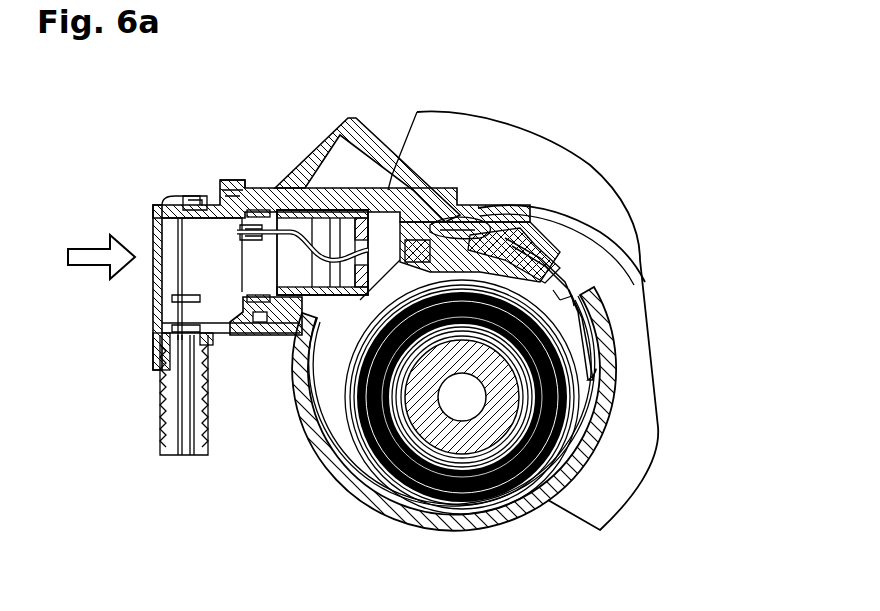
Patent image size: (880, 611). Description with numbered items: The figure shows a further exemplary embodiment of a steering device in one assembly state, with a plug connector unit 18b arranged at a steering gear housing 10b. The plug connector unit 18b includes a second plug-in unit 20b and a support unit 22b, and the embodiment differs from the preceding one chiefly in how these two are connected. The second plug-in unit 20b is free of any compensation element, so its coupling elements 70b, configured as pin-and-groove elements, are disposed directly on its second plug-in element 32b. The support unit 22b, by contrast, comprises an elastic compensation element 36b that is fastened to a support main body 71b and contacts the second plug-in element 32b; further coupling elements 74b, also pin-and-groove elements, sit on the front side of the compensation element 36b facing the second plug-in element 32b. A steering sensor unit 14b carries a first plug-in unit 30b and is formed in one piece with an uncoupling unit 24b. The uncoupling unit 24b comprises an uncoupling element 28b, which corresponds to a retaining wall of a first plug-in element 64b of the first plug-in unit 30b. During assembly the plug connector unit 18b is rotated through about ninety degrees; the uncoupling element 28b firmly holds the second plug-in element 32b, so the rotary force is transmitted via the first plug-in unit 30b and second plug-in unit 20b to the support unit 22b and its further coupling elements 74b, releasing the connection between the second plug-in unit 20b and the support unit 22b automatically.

The steering gear housing 10b is at (658, 144).
The steering sensor unit 14b is at (586, 308).
The plug connector unit 18b is at (200, 173).
The second plug-in unit 20b is at (388, 214).
The support unit 22b is at (263, 170).
The uncoupling unit 24b is at (278, 340).
The uncoupling element 28b is at (473, 226).
The first plug-in unit 30b is at (482, 228).
The second plug-in element 32b is at (412, 240).
The compensation element 36b is at (292, 212).
The first plug-in element 64b is at (560, 226).
The coupling elements 70b is at (393, 272).
The support main body 71b is at (153, 304).
The further coupling elements 74b is at (420, 272).